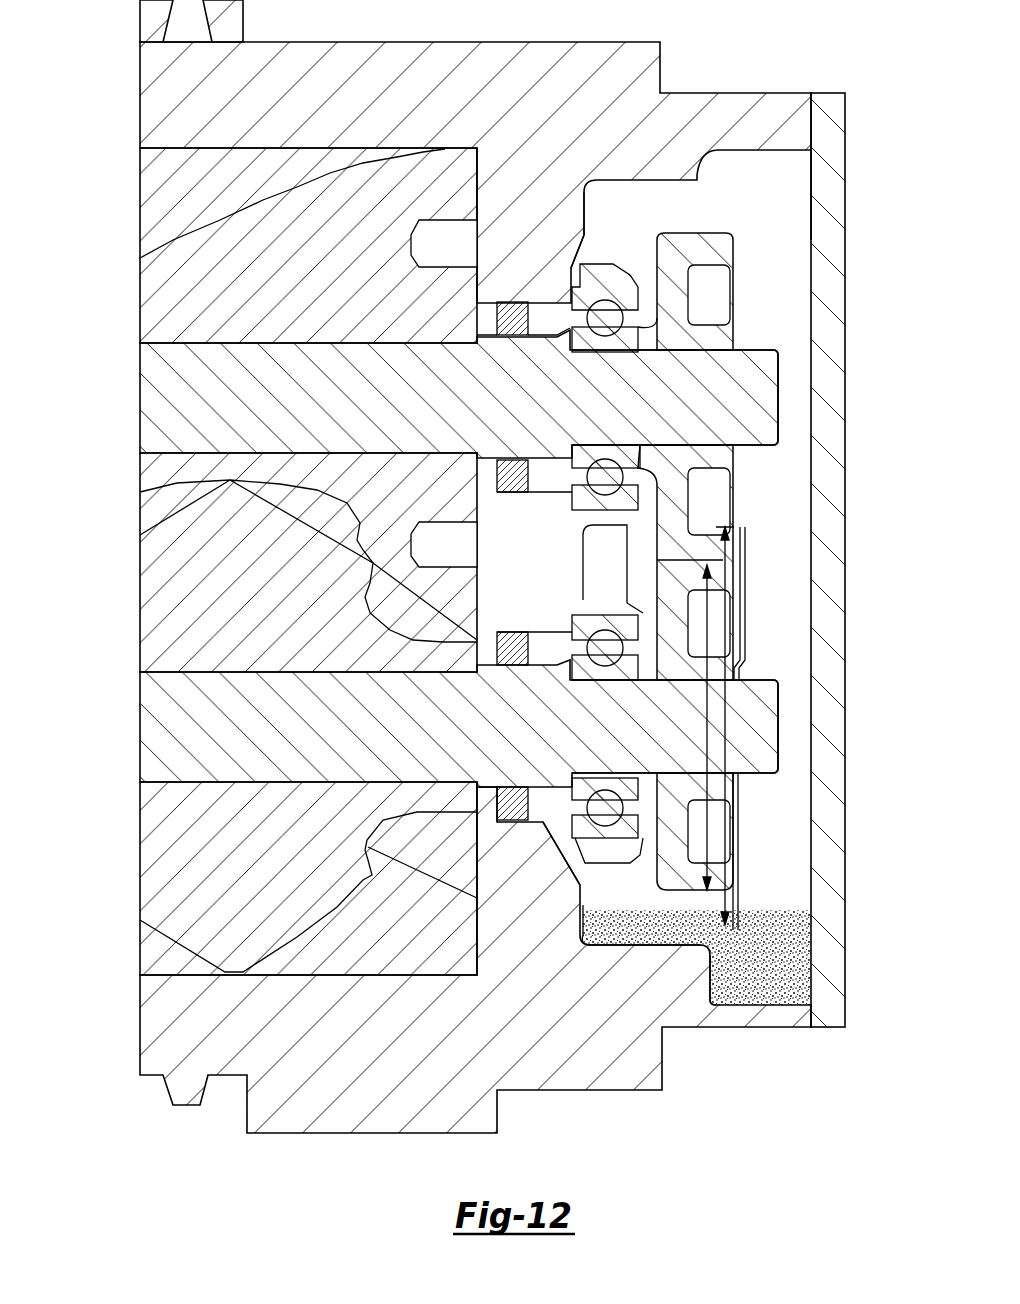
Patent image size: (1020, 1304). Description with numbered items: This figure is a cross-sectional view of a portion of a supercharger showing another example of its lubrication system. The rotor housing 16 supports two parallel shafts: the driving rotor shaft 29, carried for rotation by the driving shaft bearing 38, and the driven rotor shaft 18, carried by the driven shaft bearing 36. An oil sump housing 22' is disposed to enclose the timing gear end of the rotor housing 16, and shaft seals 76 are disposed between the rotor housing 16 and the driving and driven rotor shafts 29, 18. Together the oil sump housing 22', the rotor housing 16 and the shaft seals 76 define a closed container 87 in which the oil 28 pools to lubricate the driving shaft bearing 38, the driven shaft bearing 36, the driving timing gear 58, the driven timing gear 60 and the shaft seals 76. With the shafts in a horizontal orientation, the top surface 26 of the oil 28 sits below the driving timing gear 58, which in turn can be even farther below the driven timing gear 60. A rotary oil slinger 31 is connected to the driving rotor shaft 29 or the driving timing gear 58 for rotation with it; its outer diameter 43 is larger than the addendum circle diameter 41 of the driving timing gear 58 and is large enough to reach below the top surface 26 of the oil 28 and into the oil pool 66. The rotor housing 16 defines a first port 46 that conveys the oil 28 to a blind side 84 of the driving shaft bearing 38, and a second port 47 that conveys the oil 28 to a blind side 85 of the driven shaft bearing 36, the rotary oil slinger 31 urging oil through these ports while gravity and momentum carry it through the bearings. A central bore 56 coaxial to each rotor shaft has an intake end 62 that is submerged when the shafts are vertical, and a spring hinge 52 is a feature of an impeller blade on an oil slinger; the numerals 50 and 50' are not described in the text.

The rotor housing 16 is at (140, 1057).
The driven rotor shaft 18 is at (148, 400).
The oil sump housing 22' is at (863, 560).
The top surface 26 is at (703, 905).
The oil 28 is at (780, 992).
The driving rotor shaft 29 is at (148, 730).
The rotary oil slinger 31 is at (745, 635).
The driven shaft bearing 36 is at (630, 283).
The driving shaft bearing 38 is at (628, 840).
The addendum circle diameter 41 is at (707, 700).
The outer diameter 43 is at (688, 508).
The first port 46 is at (560, 845).
The second port 47 is at (575, 270).
The lower bearing 50 is at (577, 784).
The bearing inner race 50' is at (581, 299).
The spring hinge 52 is at (745, 905).
The central bore 56 is at (765, 380).
The driving timing gear 58 is at (722, 790).
The driven timing gear 60 is at (725, 455).
The intake end 62 is at (790, 415).
The oil pool 66 is at (715, 992).
The shaft seals 76 is at (512, 492).
The blind side 84 is at (575, 828).
The blind side 85 is at (568, 325).
The closed container 87 is at (793, 250).